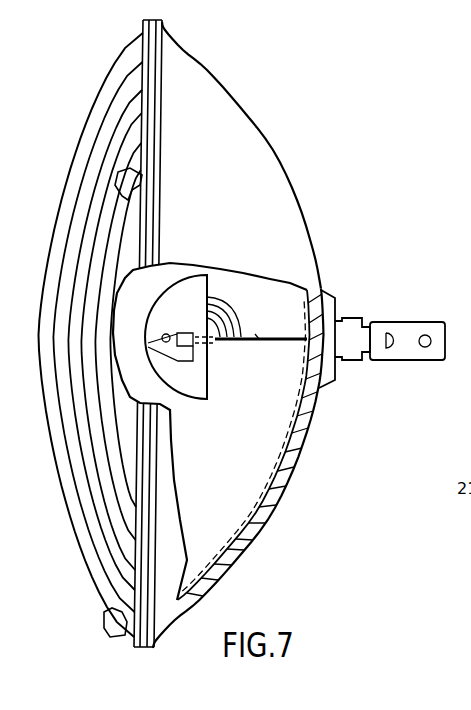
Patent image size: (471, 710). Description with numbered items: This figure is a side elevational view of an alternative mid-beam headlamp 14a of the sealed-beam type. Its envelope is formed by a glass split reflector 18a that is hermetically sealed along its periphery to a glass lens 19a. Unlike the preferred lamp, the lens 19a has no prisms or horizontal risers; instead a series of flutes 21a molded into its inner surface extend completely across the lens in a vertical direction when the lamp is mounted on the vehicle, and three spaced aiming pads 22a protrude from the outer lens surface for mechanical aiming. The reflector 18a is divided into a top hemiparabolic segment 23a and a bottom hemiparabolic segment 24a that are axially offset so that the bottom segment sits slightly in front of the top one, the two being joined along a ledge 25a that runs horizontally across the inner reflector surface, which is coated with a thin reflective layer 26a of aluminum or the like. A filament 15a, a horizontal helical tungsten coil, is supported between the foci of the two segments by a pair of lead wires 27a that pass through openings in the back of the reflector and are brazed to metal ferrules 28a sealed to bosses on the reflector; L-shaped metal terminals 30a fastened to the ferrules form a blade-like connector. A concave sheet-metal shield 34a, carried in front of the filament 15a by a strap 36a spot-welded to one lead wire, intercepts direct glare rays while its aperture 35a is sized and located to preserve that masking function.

The mid-beam headlamp 14a is at (305, 123).
The filament 15a is at (166, 333).
The split reflector 18a is at (310, 169).
The lens 19a is at (86, 560).
The flutes 21a is at (82, 511).
The aiming pads 22a is at (141, 179).
The top hemiparabolic segment 23a is at (313, 291).
The bottom hemiparabolic segment 24a is at (272, 512).
The ledge 25a is at (295, 342).
The reflective layer 26a is at (258, 497).
The lead wires 27a is at (258, 317).
The metal ferrules 28a is at (350, 352).
The L-shaped metal terminals 30a is at (408, 355).
The shield 34a is at (146, 314).
The aperture 35a is at (186, 361).
The strap 36a is at (225, 313).